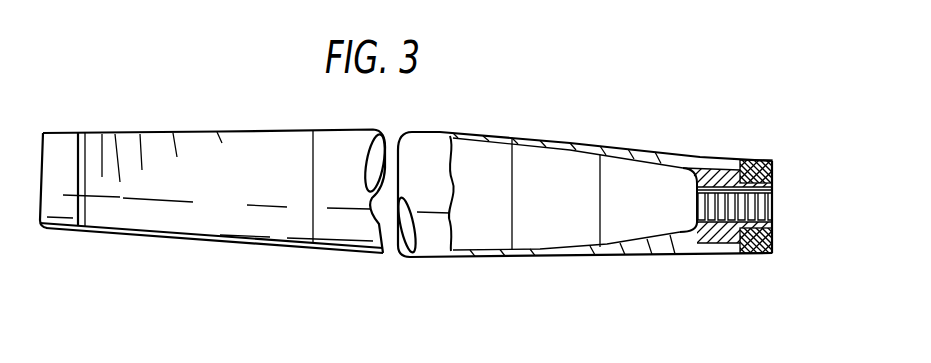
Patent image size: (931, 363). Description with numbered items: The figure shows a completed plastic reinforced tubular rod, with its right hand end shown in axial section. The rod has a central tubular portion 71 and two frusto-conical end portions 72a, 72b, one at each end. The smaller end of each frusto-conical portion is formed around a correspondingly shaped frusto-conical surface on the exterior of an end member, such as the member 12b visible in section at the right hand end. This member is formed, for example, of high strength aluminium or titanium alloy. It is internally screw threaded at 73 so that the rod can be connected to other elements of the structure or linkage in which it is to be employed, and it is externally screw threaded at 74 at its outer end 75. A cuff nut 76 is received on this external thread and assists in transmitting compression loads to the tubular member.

The frusto-conical end portion 72a is at (174, 239).
The frusto-conical end portion 72b is at (562, 254).
The central tubular portion 71 is at (472, 257).
The end member 12b is at (707, 172).
The internal screw thread 73 is at (773, 207).
The external screw thread 74 is at (742, 174).
The outer end 75 is at (772, 182).
The cuff nut 76 is at (760, 253).